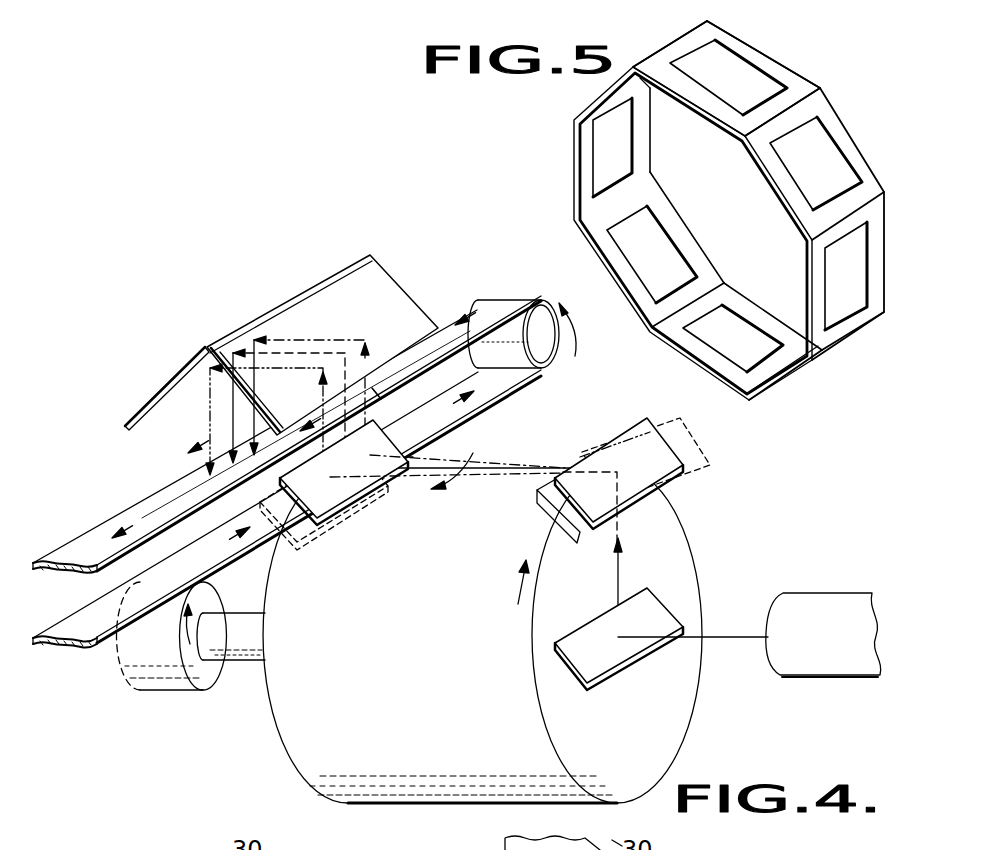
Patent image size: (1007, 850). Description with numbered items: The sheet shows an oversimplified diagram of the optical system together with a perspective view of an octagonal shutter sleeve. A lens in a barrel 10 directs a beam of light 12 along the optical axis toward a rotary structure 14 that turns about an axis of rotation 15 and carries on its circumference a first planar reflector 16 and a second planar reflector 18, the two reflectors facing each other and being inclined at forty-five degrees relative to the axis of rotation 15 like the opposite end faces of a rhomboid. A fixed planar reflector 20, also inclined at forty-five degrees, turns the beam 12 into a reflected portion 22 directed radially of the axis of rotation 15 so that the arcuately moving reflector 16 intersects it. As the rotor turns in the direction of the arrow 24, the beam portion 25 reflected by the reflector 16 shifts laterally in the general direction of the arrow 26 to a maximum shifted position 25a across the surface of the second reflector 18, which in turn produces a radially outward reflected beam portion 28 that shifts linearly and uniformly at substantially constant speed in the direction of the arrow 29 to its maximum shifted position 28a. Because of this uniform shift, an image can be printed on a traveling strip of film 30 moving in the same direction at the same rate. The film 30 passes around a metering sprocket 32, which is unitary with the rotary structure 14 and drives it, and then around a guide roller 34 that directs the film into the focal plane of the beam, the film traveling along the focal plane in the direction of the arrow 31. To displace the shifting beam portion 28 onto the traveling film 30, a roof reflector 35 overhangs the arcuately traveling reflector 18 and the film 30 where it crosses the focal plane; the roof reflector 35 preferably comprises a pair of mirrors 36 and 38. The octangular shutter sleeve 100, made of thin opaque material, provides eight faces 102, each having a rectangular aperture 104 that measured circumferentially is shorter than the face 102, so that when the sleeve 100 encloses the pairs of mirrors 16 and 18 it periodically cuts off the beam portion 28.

In FIG. 4, the barrel 10 is at (828, 597).
In FIG. 4, the beam of light 12 is at (722, 636).
In FIG. 4, the rotary structure 14 is at (420, 808).
In FIG. 4, the axis of rotation 15 is at (454, 655).
In FIG. 4, the first planar reflector 16 is at (668, 452).
In FIG. 4, the second planar reflector 18 is at (318, 506).
In FIG. 4, the fixed planar reflector 20 is at (620, 664).
In FIG. 4, the reflected portion of the beam 22 is at (619, 574).
In FIG. 4, the arrow 24 is at (518, 600).
In FIG. 4, the beam portion 25 is at (495, 463).
In FIG. 4, the maximum shifted position of the beam 25a is at (481, 485).
In FIG. 4, the arrow 26 is at (455, 490).
In FIG. 4, the reflected beam portion 28 is at (366, 356).
In FIG. 4, the maximum shifted position 28a is at (326, 388).
In FIG. 4, the arrow 29 is at (377, 394).
In FIG. 4, the film 30 is at (92, 532).
In FIG. 4, the arrow 31 is at (145, 517).
In FIG. 4, the metering sprocket 32 is at (163, 690).
In FIG. 4, the guide roller 34 is at (561, 357).
In FIG. 4, the roof reflector 35 is at (279, 329).
In FIG. 4, the mirror 36 is at (386, 289).
In FIG. 4, the mirror 38 is at (164, 390).
In FIG. 5, the shutter sleeve 100 is at (842, 112).
In FIG. 5, the octangular face 102 is at (753, 49).
In FIG. 5, the rectangular aperture 104 is at (758, 82).